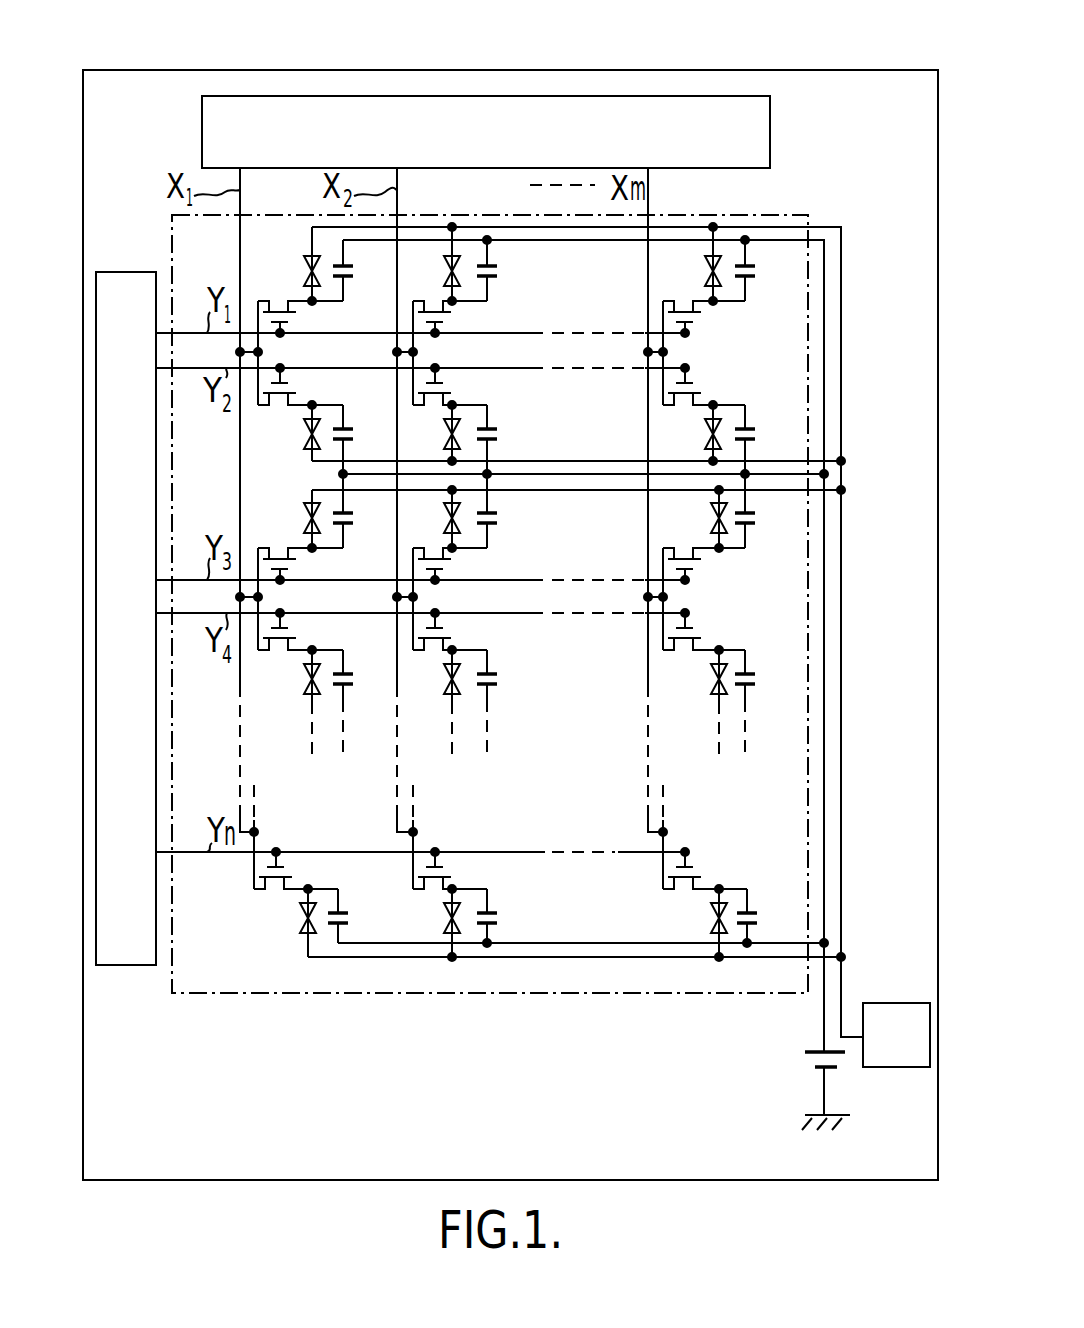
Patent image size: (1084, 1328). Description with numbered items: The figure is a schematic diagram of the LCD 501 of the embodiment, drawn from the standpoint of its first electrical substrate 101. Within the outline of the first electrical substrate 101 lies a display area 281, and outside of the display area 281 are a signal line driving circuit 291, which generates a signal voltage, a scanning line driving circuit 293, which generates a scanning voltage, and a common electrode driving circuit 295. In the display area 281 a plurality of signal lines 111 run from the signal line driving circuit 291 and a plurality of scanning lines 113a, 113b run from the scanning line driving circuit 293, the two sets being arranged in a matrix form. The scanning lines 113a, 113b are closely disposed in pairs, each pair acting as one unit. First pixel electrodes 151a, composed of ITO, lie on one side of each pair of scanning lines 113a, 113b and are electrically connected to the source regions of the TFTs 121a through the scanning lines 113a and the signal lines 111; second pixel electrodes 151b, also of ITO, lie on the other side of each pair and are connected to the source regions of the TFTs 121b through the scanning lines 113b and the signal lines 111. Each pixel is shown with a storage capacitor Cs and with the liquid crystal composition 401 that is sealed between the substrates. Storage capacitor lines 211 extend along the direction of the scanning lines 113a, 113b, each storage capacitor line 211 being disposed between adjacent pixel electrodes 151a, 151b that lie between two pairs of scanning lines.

The LCD 501 is at (755, 70).
The first electrical substrate 101 is at (612, 70).
The signal line driving circuit 291 is at (772, 122).
The scanning line driving circuit 293 is at (118, 965).
The common electrode driving circuit 295 is at (880, 1064).
The signal lines 111 is at (260, 186).
The scanning lines 113a is at (185, 333).
The scanning lines 113b is at (187, 370).
The TFTs 121a is at (280, 300).
The TFTs 121b is at (280, 407).
The first pixel electrodes 151a is at (314, 301).
The second pixel electrodes 151b is at (327, 380).
The liquid crystal composition 401 is at (448, 283).
The storage capacitors Cs is at (548, 591).
The display area 281 is at (810, 296).
The storage capacitor lines 211 is at (822, 383).